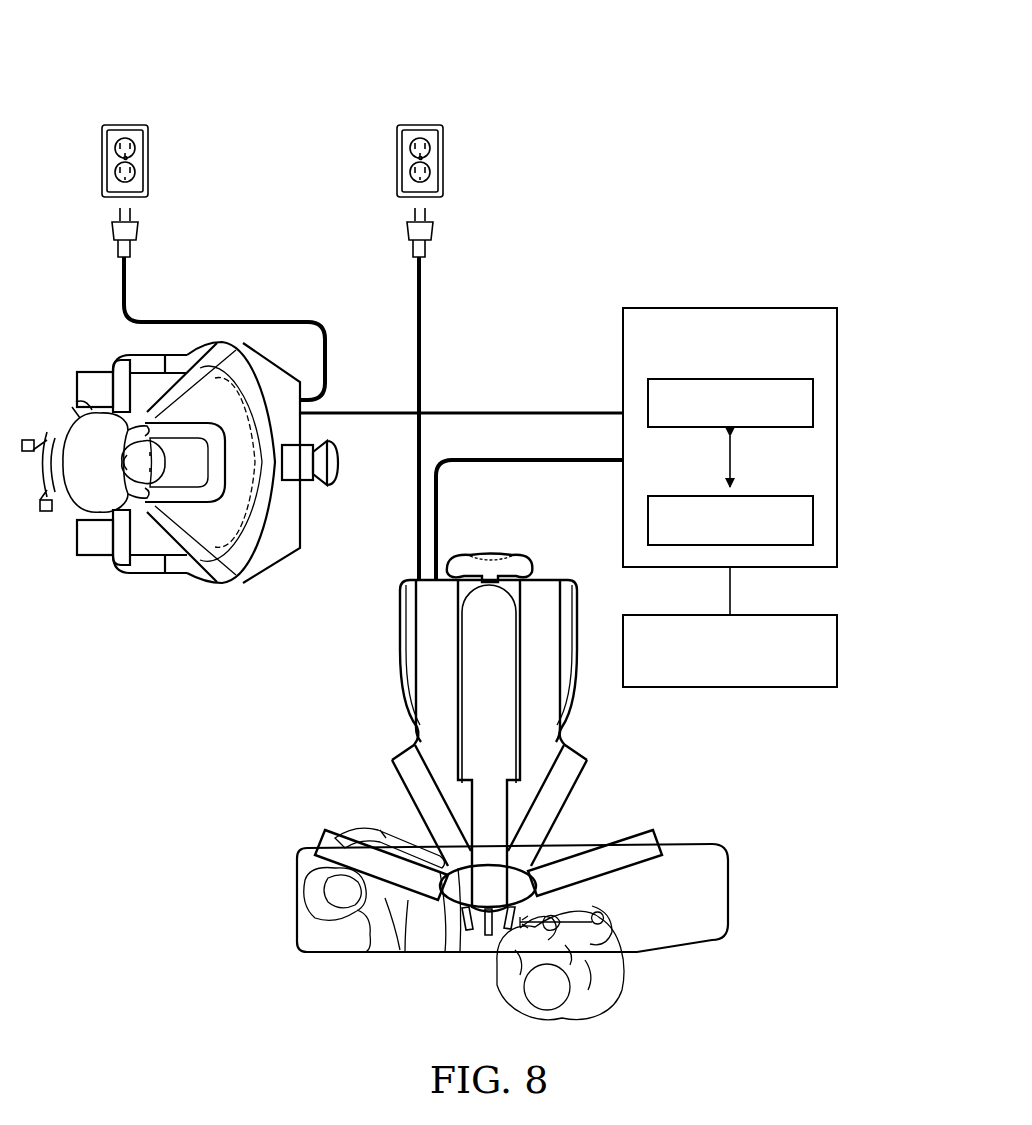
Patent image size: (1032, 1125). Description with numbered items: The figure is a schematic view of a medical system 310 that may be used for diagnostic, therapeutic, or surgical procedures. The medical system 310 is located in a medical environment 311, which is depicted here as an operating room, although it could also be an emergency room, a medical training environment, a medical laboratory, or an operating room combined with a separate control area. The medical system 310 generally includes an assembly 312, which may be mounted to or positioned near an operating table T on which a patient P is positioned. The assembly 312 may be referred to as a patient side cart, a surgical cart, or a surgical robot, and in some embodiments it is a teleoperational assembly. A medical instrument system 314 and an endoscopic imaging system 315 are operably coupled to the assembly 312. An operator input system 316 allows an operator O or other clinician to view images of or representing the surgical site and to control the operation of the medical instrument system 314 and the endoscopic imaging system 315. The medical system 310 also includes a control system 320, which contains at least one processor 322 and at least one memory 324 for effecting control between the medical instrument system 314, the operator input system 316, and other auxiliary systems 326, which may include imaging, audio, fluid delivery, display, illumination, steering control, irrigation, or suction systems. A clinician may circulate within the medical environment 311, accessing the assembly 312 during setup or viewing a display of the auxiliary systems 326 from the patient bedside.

The medical system 310 is at (660, 171).
The medical environment 311 is at (732, 65).
The assembly 312 is at (488, 783).
The medical instrument system 314 is at (562, 888).
The endoscopic imaging system 315 is at (480, 932).
The operator input system 316 is at (277, 565).
The control system 320 is at (842, 437).
The processor 322 is at (743, 378).
The memory 324 is at (753, 495).
The auxiliary systems 326 is at (838, 650).
The operator O is at (70, 435).
The patient P is at (323, 924).
The operating table T is at (662, 952).